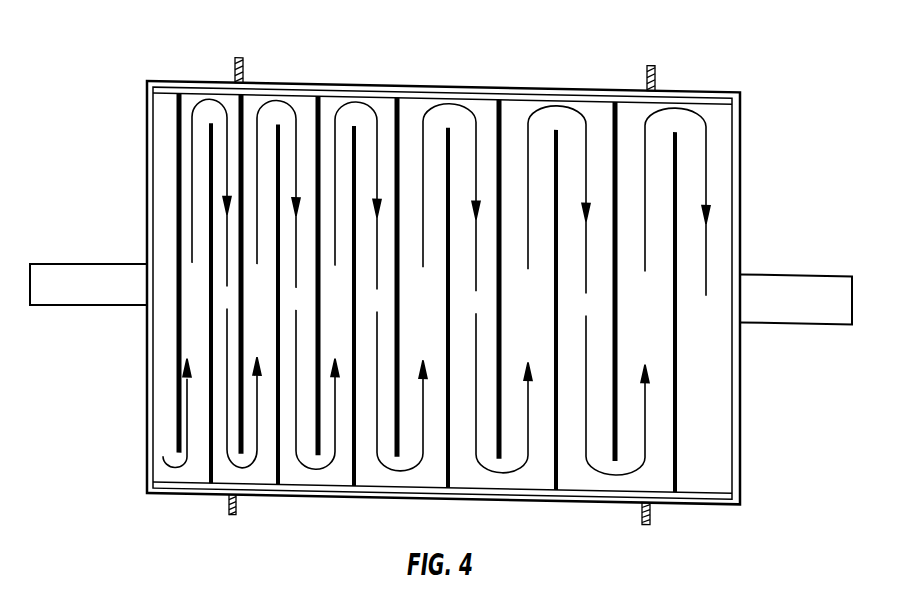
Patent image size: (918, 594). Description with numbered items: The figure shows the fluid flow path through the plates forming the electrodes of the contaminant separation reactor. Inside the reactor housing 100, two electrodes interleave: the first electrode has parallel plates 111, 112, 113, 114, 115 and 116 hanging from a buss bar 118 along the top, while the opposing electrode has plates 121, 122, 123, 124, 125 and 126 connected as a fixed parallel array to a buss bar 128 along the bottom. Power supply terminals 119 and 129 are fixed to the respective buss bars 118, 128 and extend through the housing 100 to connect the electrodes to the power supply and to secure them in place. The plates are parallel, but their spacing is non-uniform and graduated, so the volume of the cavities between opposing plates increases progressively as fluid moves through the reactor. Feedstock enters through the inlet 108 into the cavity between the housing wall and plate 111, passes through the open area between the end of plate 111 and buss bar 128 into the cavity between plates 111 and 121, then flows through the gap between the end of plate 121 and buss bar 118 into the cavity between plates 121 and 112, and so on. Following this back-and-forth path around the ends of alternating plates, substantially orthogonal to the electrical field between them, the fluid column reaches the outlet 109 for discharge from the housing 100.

The reactor housing 100 is at (484, 292).
The inlet 108 is at (88, 259).
The outlet 109 is at (796, 280).
The electrode plate 111 is at (143, 253).
The electrode plate 112 is at (205, 254).
The electrode plate 113 is at (282, 255).
The electrode plate 114 is at (361, 257).
The electrode plate 115 is at (464, 259).
The electrode plate 116 is at (579, 260).
The buss bar 118 is at (472, 81).
The power supply terminal 119 is at (410, 50).
The plate 121 is at (172, 322).
The plate 122 is at (238, 351).
The plate 123 is at (315, 326).
The plate 124 is at (409, 328).
The plate 125 is at (517, 331).
The plate 126 is at (710, 334).
The buss bar 128 is at (442, 523).
The power supply terminal 129 is at (404, 529).